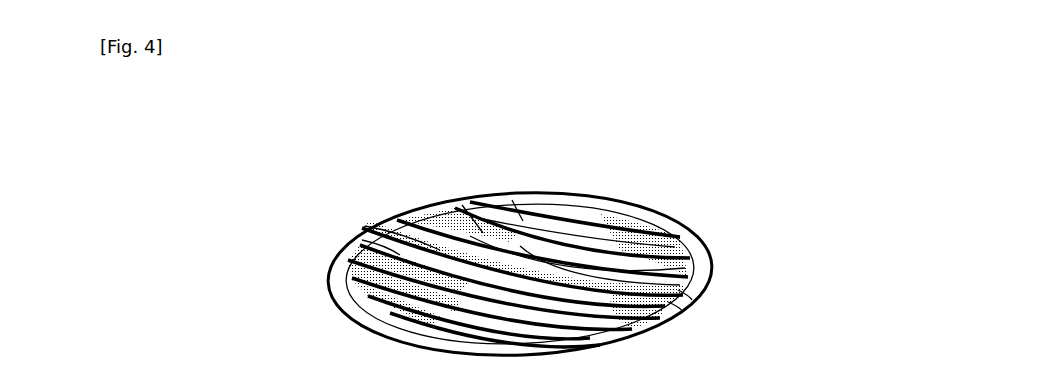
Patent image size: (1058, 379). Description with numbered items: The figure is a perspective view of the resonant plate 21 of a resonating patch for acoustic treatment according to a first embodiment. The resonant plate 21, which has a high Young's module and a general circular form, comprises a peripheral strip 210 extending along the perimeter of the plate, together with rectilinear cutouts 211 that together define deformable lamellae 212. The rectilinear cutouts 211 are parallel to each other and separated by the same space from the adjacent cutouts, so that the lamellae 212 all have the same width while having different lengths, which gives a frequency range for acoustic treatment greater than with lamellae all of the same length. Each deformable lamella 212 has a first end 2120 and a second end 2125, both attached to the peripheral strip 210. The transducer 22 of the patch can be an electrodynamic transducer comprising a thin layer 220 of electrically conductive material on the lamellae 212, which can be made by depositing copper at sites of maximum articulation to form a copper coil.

The resonant plate 21 is at (337, 302).
The peripheral strip 210 is at (670, 223).
The transducer 22 is at (695, 253).
The thin layer of electrically conductive material 220 is at (370, 225).
The rectilinear cutouts 211 is at (580, 265).
The deformable lamellae 212 is at (523, 221).
The second end 2125 is at (400, 232).
The first end 2120 is at (663, 318).